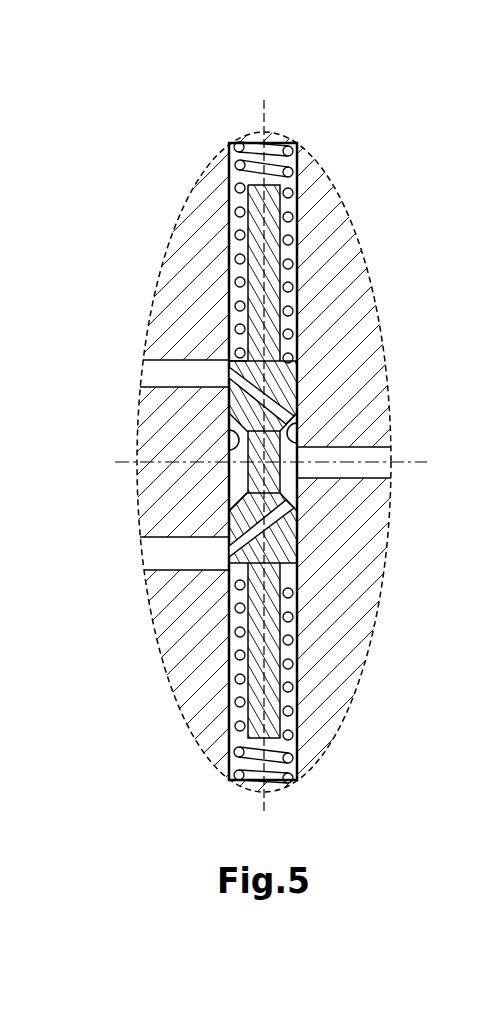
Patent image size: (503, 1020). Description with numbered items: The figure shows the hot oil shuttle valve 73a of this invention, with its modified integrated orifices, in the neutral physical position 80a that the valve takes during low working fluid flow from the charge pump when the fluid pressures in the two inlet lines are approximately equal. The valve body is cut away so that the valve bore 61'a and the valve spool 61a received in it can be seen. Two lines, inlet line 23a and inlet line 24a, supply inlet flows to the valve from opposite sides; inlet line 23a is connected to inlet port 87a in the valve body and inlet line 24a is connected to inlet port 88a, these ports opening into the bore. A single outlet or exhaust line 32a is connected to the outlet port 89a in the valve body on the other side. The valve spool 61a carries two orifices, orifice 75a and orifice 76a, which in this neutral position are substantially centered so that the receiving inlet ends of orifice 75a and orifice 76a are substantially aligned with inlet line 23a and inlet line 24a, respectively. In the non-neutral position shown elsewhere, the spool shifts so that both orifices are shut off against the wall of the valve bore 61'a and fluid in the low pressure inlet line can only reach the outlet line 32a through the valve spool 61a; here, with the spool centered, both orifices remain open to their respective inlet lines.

The neutral physical position 80a is at (226, 90).
The hot oil shuttle valve 73a is at (214, 320).
The inlet port 87a is at (230, 358).
The inlet line 23a is at (160, 372).
The valve bore 61'a is at (130, 434).
The inlet port 88a is at (230, 537).
The inlet line 24a is at (165, 553).
The valve spool 61a is at (300, 370).
The orifice 75a is at (282, 393).
The outlet port 89a is at (298, 425).
The outlet line 32a is at (385, 468).
The orifice 76a is at (283, 526).